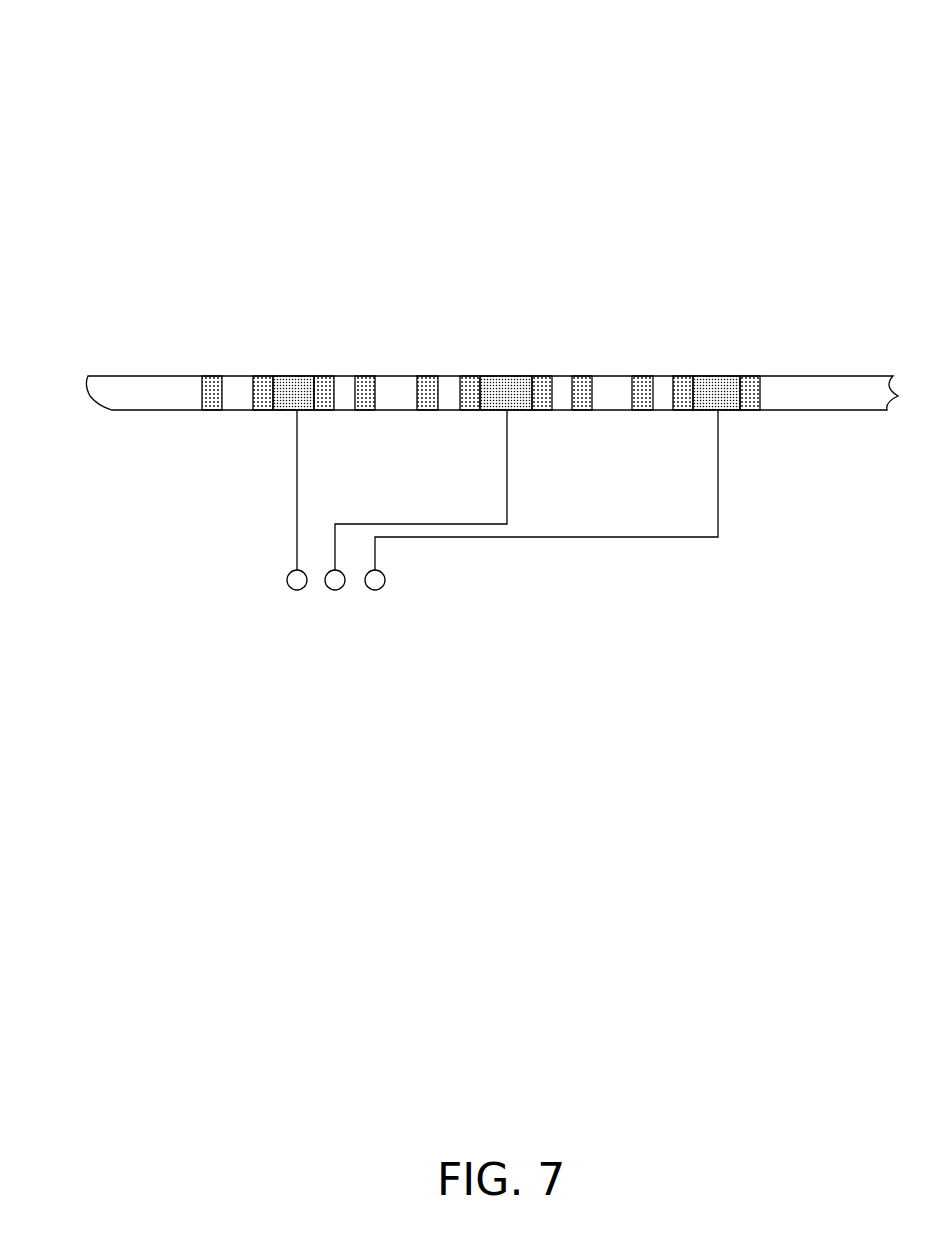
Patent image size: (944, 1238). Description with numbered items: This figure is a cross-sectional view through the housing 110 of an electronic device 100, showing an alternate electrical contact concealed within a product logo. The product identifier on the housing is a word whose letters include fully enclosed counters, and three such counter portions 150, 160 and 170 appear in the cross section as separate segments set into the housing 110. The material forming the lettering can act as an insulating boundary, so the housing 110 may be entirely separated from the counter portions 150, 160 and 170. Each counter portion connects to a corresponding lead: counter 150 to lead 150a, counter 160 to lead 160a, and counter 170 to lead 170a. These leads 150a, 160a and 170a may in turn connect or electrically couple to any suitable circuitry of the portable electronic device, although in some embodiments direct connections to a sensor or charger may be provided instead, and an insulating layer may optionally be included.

The electronic device 100 is at (296, 50).
The housing 110 is at (120, 376).
The counter 150 is at (299, 358).
The counter 160 is at (507, 358).
The counter 170 is at (735, 365).
The lead 150a is at (290, 587).
The lead 160a is at (341, 591).
The lead 170a is at (378, 591).